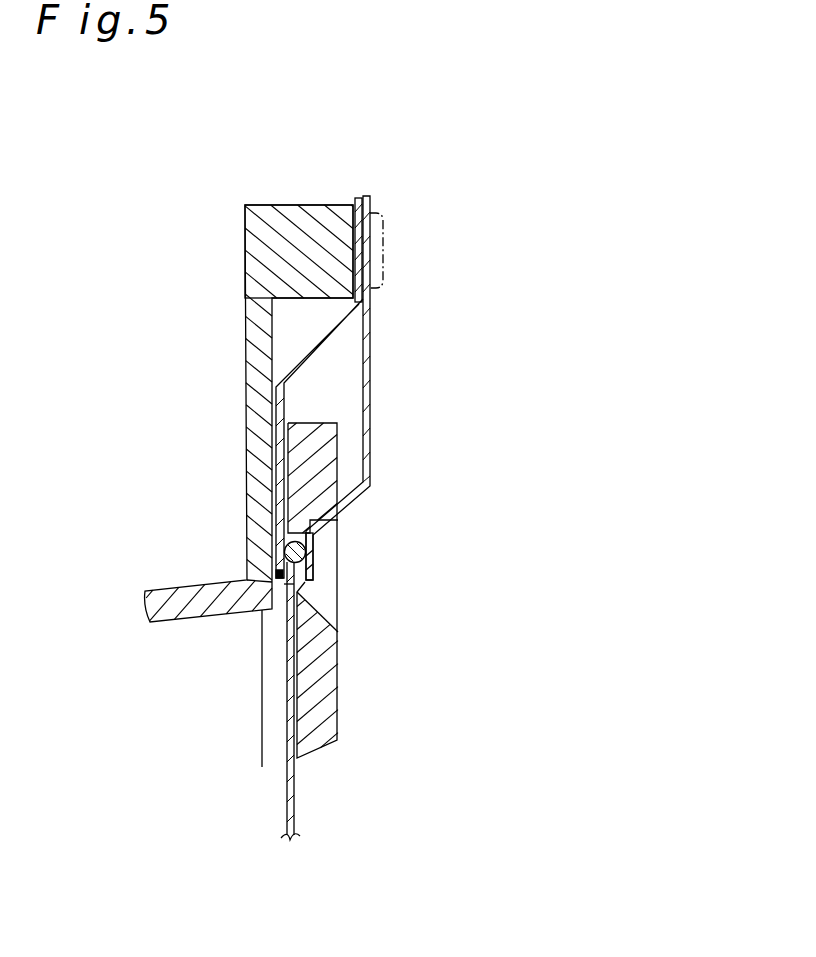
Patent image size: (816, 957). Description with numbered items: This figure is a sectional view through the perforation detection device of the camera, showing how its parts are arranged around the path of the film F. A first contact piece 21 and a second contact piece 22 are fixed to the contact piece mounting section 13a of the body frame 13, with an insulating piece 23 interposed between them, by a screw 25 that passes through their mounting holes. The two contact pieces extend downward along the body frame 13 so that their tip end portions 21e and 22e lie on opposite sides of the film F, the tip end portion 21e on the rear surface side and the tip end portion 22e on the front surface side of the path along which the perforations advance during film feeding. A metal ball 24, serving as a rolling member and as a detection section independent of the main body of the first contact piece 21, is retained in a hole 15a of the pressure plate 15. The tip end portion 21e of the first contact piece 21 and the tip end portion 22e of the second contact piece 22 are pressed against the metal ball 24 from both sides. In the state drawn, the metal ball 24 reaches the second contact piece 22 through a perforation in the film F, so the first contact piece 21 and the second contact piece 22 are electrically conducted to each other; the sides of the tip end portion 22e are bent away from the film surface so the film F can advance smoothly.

The body frame 13 is at (246, 400).
The contact piece mounting section 13a is at (293, 238).
The pressure plate 15 is at (340, 675).
The hole 15a is at (307, 522).
The first contact piece 21 is at (371, 362).
The tip end portion of the first contact piece 21e is at (313, 568).
The second contact piece 22 is at (298, 363).
The tip end portion of the second contact piece 22e is at (278, 562).
The insulating piece 23 is at (361, 200).
The metal ball 24 is at (288, 613).
The screw 25 is at (383, 252).
The film F is at (295, 797).